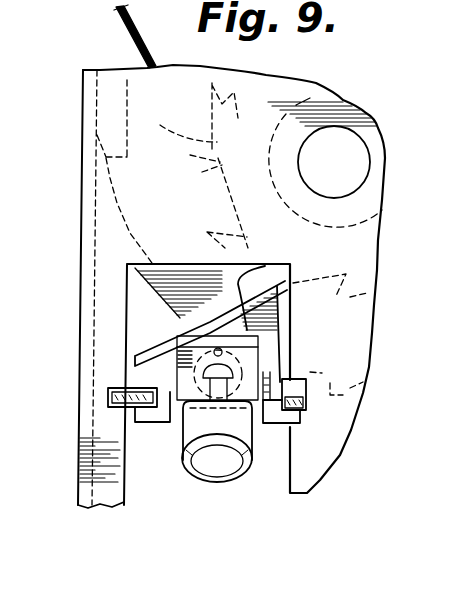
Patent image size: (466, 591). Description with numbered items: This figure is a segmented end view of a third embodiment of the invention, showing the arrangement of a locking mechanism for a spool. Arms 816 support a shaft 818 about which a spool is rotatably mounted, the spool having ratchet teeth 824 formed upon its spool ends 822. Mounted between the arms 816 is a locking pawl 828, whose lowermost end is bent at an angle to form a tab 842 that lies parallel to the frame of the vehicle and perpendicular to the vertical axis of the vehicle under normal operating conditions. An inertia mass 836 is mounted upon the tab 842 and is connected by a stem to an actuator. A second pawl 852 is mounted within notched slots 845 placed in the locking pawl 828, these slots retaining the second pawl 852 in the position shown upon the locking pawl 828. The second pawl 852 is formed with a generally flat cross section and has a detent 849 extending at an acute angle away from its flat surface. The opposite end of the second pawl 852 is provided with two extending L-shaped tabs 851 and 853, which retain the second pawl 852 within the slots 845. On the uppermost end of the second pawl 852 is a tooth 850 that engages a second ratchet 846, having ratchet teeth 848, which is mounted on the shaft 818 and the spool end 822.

The arms 816 is at (198, 88).
The shaft 818 is at (338, 150).
The spool ends 822 is at (133, 77).
The ratchet teeth 824 is at (86, 129).
The locking pawl 828 is at (107, 397).
The inertia mass 836 is at (212, 467).
The tab 842 is at (243, 334).
The notched slots 845 is at (304, 410).
The second ratchet 846 is at (192, 165).
The ratchet teeth 848 is at (139, 210).
The detent 849 is at (232, 327).
The tooth 850 is at (273, 263).
The L-shaped tab 851 is at (150, 423).
The second pawl 852 is at (260, 332).
The L-shaped tab 853 is at (275, 425).